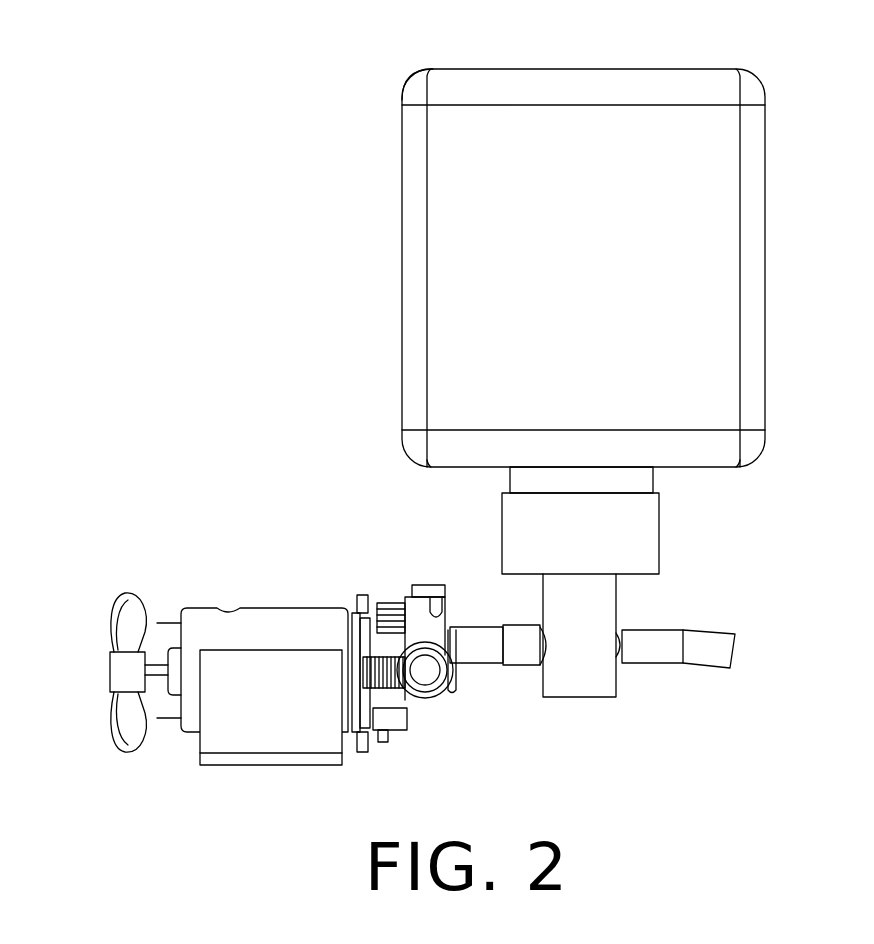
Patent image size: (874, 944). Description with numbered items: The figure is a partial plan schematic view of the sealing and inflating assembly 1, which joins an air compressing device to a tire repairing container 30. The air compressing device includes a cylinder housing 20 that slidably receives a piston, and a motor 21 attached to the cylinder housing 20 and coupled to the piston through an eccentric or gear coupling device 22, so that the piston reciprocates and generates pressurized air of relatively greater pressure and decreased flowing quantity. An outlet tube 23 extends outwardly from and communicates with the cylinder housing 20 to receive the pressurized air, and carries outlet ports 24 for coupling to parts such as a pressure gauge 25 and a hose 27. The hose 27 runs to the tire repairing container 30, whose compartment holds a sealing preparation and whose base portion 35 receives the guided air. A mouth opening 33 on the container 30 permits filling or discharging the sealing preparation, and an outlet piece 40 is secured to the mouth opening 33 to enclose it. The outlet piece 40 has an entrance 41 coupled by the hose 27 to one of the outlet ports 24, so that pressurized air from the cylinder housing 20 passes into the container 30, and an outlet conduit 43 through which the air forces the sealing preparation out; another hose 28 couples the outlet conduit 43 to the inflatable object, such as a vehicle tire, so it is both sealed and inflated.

The sealing and inflating assembly 1 is at (182, 415).
The cylinder housing 20 is at (427, 715).
The motor 21 is at (260, 618).
The eccentric or gear coupling device 22 is at (360, 596).
The outlet tube 23 is at (445, 695).
The outlet port 24 is at (454, 626).
The pressure gauge 25 is at (275, 735).
The hose 27 is at (487, 655).
The another hose 28 is at (706, 657).
The tire repairing container 30 is at (745, 213).
The mouth opening 33 is at (632, 475).
The base portion 35 is at (407, 94).
The outlet piece 40 is at (643, 535).
The entrance 41 is at (542, 665).
The outlet conduit 43 is at (617, 660).